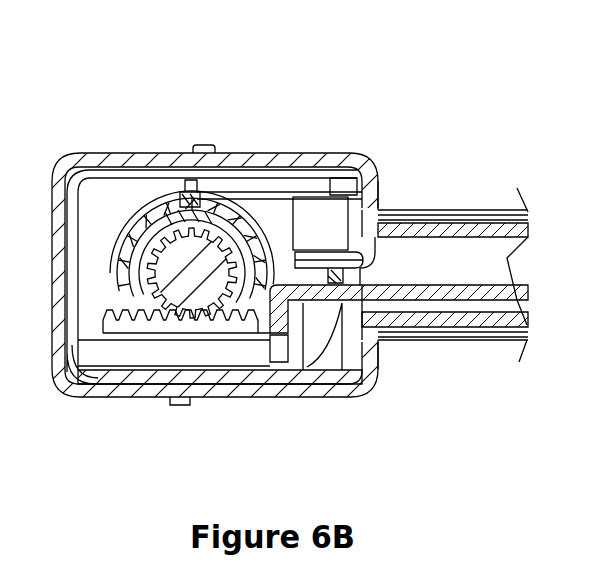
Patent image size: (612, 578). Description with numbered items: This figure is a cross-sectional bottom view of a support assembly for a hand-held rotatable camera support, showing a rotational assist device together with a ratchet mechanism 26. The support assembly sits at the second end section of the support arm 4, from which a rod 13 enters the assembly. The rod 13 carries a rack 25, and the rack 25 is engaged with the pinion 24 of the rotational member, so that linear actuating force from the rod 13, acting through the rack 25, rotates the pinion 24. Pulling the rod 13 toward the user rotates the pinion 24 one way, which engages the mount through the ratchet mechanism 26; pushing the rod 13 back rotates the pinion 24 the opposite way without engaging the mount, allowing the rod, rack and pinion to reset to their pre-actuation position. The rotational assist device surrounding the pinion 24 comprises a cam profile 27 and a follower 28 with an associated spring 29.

The support arm 4 is at (463, 207).
The rod 13 is at (485, 305).
The pinion 24 is at (154, 314).
The rack 25 is at (203, 346).
The ratchet mechanism 26 is at (178, 207).
The cam profile 27 is at (107, 268).
The follower 28 is at (222, 177).
The spring 29 is at (353, 220).